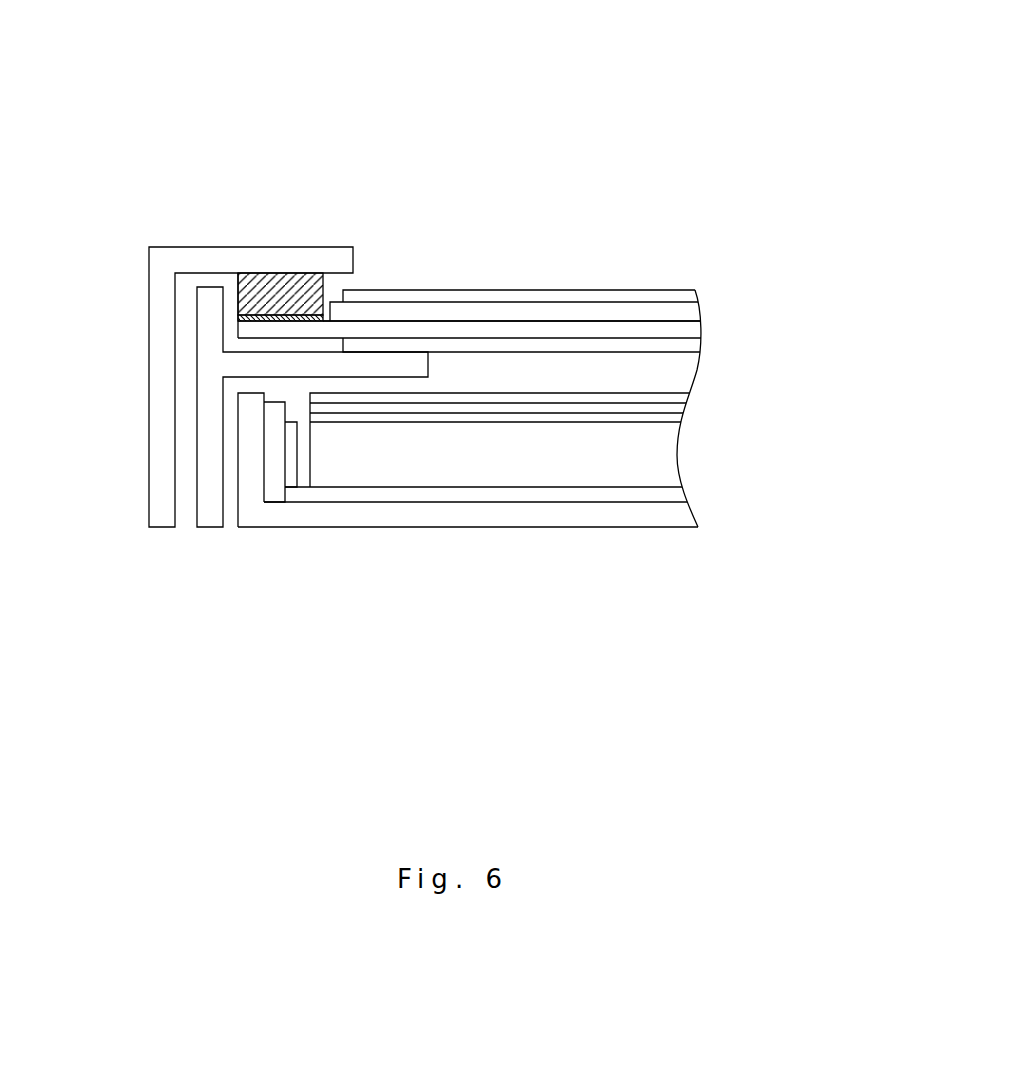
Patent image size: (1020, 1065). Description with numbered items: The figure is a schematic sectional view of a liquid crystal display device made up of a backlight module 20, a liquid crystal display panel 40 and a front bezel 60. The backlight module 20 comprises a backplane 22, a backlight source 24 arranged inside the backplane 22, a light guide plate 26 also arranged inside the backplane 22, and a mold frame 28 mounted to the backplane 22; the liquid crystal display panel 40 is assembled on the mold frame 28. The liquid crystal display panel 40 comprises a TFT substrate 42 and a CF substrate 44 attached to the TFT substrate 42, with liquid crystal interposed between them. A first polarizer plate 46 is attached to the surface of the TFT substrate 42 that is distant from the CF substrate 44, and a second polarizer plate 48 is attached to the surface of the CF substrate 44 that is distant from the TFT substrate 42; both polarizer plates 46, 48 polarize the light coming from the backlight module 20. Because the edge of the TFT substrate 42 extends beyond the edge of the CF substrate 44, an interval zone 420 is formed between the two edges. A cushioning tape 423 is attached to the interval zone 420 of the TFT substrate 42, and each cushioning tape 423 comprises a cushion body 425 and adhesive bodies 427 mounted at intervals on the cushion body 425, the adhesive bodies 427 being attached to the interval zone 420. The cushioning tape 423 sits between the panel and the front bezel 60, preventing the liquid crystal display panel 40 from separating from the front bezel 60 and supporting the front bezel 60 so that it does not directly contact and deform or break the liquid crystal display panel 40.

The backlight module 20 is at (456, 542).
The backplane 22 is at (468, 563).
The backlight source 24 is at (288, 458).
The light guide plate 26 is at (432, 455).
The mold frame 28 is at (207, 503).
The liquid crystal display panel 40 is at (579, 342).
The TFT substrate 42 is at (683, 328).
The CF substrate 44 is at (492, 313).
The first polarizer plate 46 is at (638, 347).
The second polarizer plate 48 is at (625, 297).
The front bezel 60 is at (155, 500).
The interval zone 420 is at (242, 172).
The cushioning tape 423 is at (297, 164).
The cushion body 425 is at (284, 293).
The adhesive body 427 is at (318, 290).